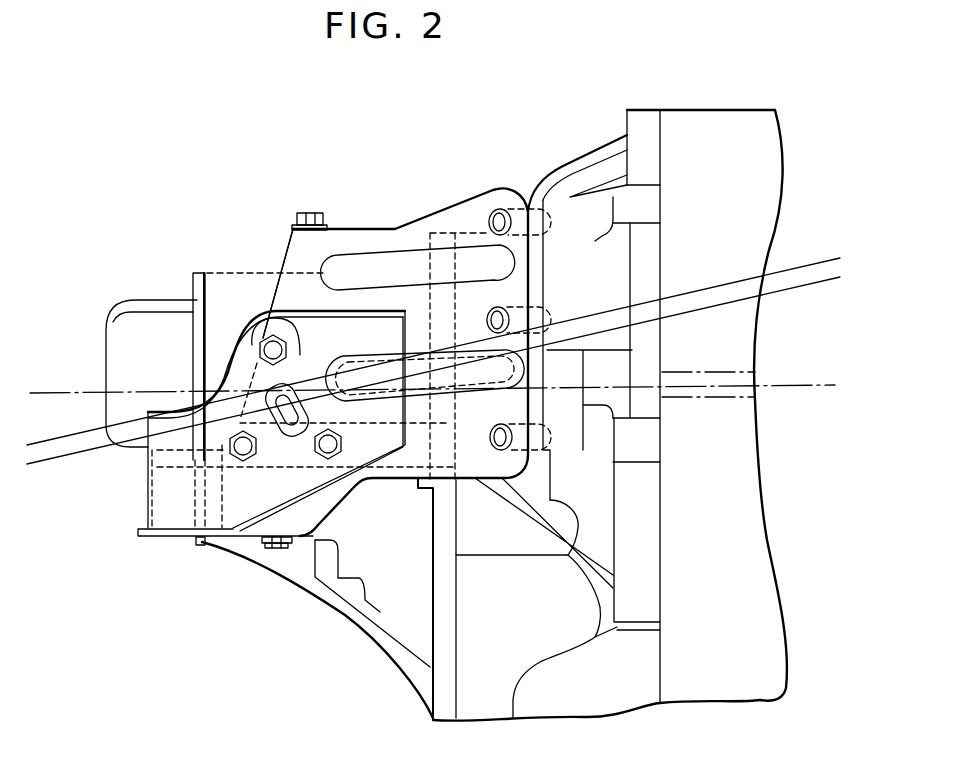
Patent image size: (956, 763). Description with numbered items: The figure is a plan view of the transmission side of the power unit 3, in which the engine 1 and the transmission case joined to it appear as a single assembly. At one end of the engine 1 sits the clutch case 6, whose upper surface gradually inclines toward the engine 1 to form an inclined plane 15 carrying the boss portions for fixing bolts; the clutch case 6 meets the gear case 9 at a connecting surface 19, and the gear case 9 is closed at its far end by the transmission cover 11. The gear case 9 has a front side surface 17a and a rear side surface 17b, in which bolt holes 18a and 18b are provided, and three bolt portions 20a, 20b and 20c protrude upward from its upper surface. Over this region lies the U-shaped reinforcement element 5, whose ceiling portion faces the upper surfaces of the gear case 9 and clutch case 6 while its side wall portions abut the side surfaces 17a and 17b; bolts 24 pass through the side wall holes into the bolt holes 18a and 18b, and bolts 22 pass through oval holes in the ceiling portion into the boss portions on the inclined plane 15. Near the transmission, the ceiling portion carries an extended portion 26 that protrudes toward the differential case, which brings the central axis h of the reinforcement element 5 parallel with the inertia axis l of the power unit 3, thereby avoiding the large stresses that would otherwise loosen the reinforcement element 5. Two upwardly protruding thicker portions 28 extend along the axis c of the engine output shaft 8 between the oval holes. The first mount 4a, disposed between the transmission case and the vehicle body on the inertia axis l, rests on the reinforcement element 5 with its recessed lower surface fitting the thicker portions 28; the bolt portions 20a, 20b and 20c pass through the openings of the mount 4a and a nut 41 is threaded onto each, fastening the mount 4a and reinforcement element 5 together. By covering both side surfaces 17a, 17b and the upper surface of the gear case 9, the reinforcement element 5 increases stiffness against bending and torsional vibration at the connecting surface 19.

The engine 1 is at (718, 110).
The power unit 3 is at (645, 100).
The first mount 4a is at (148, 537).
The reinforcement element 5 is at (433, 220).
The clutch case 6 is at (543, 192).
The engine output shaft 8 is at (688, 398).
The gear case 9 is at (234, 262).
The transmission cover 11 is at (143, 296).
The inclined plane 15 is at (587, 178).
The front side surface 17a is at (262, 256).
The rear side surface 17b is at (243, 538).
The bolt hole 18a is at (333, 229).
The bolt hole 18b is at (303, 540).
The connecting surface 19 is at (200, 272).
The bolt portion 20a is at (265, 342).
The bolt portion 20b is at (337, 463).
The bolt portion 20c is at (238, 465).
The bolt 22 is at (495, 213).
The bolt 24 is at (308, 213).
The extended portion 26 is at (333, 507).
The thicker portion 28 is at (370, 254).
The nut 41 is at (260, 356).
The central axis h is at (445, 343).
The inertia axis l is at (442, 366).
The axis c is at (445, 384).